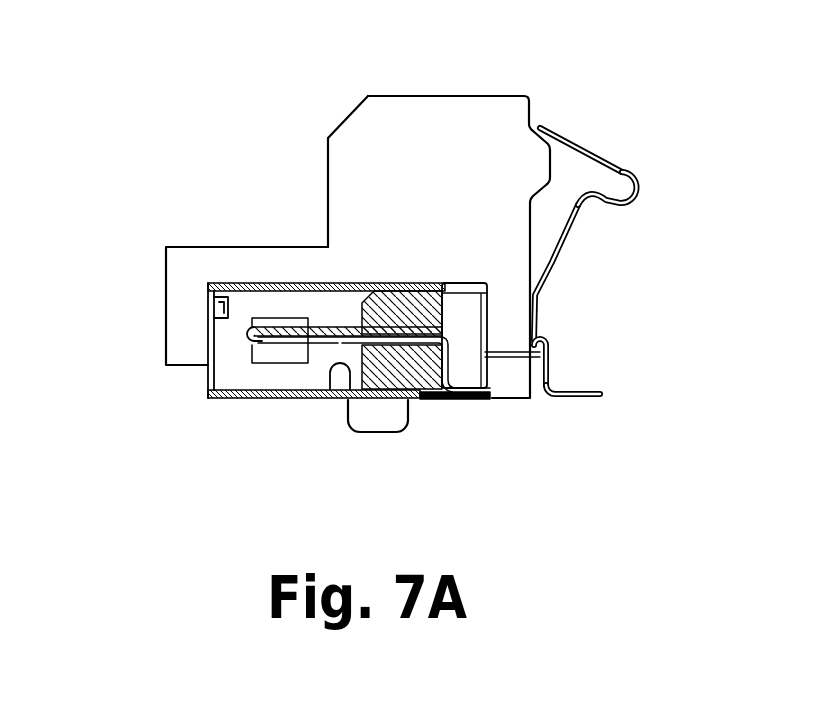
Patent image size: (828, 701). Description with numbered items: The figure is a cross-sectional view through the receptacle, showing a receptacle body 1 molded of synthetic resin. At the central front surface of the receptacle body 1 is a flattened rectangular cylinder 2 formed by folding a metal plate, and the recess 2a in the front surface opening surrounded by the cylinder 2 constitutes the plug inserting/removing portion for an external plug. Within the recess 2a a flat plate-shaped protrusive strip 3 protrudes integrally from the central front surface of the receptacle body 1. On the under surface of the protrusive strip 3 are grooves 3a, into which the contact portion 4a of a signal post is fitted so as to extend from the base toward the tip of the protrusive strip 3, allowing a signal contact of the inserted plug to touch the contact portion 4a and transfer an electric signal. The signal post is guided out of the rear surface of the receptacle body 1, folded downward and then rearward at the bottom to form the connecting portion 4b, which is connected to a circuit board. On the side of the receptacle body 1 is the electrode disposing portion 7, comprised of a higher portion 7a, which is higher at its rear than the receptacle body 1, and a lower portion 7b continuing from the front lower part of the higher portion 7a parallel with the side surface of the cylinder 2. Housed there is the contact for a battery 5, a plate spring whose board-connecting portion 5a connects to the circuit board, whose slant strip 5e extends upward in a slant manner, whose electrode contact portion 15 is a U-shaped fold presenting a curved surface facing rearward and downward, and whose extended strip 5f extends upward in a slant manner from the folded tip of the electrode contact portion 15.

The receptacle body 1 is at (417, 300).
The flattened rectangular cylinder 2 is at (290, 285).
The recess 2a is at (213, 328).
The protrusive strip 3 is at (337, 332).
The grooves 3a is at (253, 348).
The contact portion 4a is at (298, 340).
The connecting portion 4b is at (463, 400).
The contact for a battery 5 is at (612, 279).
The board-connecting portion 5a is at (573, 405).
The slant strip 5e is at (548, 276).
The extended strip 5f is at (587, 148).
The electrode disposing portion 7 is at (424, 110).
The higher portion 7a is at (345, 118).
The lower portion 7b is at (177, 268).
The electrode contact portion 15 is at (636, 180).